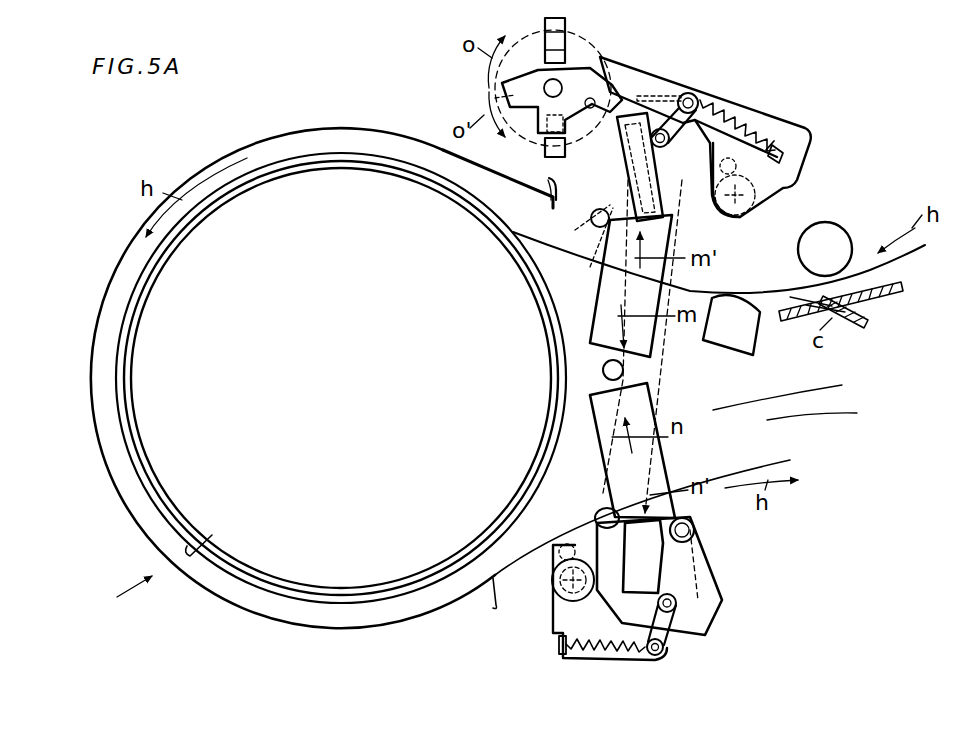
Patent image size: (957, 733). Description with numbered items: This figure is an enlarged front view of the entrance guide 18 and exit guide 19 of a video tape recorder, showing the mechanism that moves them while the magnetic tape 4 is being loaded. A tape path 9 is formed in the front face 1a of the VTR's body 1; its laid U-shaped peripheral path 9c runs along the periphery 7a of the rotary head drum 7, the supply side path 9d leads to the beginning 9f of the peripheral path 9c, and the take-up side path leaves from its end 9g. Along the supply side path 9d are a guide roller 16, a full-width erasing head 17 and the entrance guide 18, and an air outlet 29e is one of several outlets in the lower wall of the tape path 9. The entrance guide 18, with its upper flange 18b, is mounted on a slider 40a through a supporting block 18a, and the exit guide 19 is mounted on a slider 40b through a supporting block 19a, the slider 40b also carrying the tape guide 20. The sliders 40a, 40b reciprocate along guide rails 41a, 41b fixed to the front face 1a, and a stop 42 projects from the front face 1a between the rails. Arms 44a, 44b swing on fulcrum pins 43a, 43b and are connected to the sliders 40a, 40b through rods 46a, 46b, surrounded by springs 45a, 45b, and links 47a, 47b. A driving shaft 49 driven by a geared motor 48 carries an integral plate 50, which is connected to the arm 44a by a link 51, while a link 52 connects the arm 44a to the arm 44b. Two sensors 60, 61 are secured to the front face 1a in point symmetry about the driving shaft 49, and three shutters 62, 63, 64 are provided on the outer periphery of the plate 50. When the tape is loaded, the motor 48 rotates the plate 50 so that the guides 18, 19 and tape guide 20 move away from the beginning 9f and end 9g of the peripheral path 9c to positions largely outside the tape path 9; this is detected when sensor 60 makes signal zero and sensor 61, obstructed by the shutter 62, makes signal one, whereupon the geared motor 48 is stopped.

The VTR's body 1 is at (122, 592).
The front face 1a is at (821, 414).
The magnetic tape 4 is at (398, 157).
The rotary head drum 7 is at (349, 600).
The periphery 7a is at (192, 545).
The tape path 9 is at (788, 391).
The peripheral path 9c is at (333, 148).
The supply side path 9d is at (898, 292).
The beginning of the peripheral path 9f is at (533, 265).
The end of the peripheral path 9g is at (491, 570).
The guide roller 16 is at (840, 240).
The full-width erasing head 17 is at (748, 340).
The entrance guide 18 is at (586, 222).
The supporting block 18a is at (592, 213).
The upper flange 18b is at (584, 251).
The exit guide 19 is at (595, 512).
The supporting block 19a is at (650, 565).
The tape guide 20 is at (695, 532).
The air outlet 29e is at (855, 328).
The slider 40a is at (626, 120).
The slider 40b is at (702, 597).
The guide rail 41a is at (590, 333).
The guide rail 41b is at (603, 457).
The stop 42 is at (600, 370).
The fulcrum pin 43a is at (735, 215).
The fulcrum pin 43b is at (560, 585).
The arm 44a is at (778, 193).
The arm 44b is at (560, 622).
The spring 45a is at (774, 140).
The spring 45b is at (633, 656).
The rod 46a is at (735, 120).
The rod 46b is at (598, 655).
The link 47a is at (676, 105).
The link 47b is at (680, 645).
The geared motor 48 is at (492, 66).
The driving shaft 49 is at (560, 88).
The plate 50 is at (568, 75).
The link 51 is at (665, 85).
The link 52 is at (652, 372).
The sensor 60 is at (548, 26).
The sensor 61 is at (548, 182).
The shutter 62 is at (545, 150).
The shutter 63 is at (495, 98).
The shutter 64 is at (593, 150).